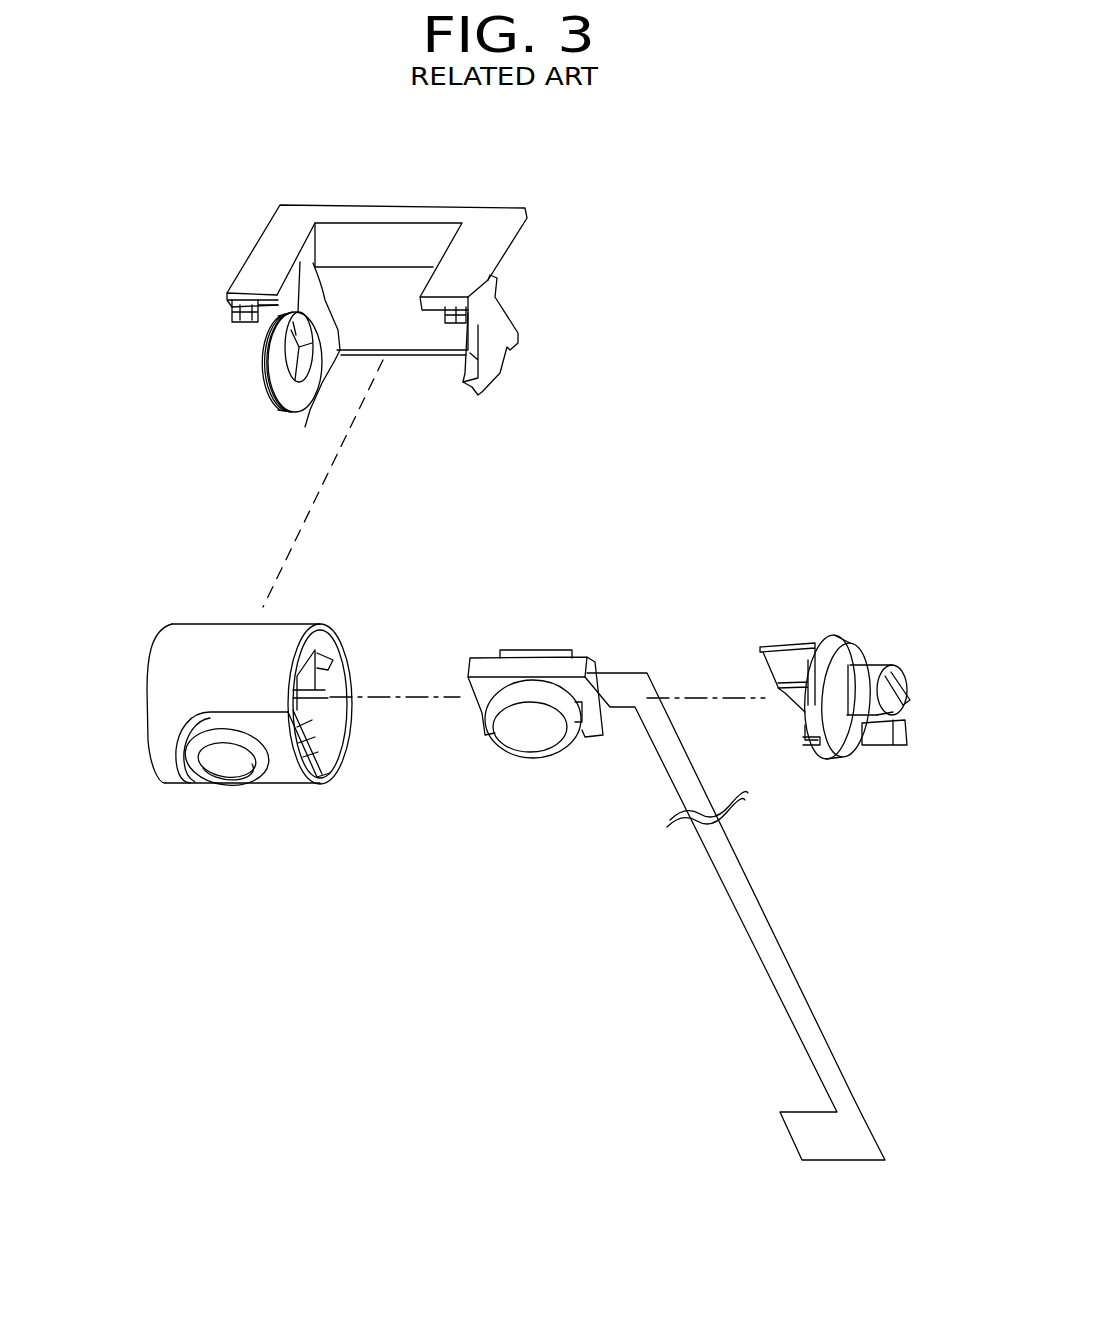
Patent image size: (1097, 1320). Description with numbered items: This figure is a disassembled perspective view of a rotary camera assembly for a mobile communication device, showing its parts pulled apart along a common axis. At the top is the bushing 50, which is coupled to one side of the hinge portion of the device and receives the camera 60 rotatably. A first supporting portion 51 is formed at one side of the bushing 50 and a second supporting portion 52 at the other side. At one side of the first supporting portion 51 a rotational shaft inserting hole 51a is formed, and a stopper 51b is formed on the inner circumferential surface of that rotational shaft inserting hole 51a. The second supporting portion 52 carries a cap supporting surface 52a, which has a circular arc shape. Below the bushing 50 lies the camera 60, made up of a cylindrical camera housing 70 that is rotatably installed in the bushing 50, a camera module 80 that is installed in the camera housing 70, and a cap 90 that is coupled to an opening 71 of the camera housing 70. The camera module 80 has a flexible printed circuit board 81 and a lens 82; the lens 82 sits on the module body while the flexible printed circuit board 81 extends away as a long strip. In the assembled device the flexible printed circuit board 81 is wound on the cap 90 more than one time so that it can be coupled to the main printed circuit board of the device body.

The bushing 50 is at (392, 329).
The first supporting portion 51 is at (245, 376).
The rotational shaft inserting hole 51a is at (313, 397).
The stopper 51b is at (270, 307).
The second supporting portion 52 is at (544, 335).
The cap supporting surface 52a is at (475, 353).
The camera 60 is at (247, 760).
The camera housing 70 is at (275, 727).
The opening 71 is at (340, 678).
The camera module 80 is at (676, 905).
The flexible printed circuit board 81 is at (735, 916).
The lens 82 is at (512, 732).
The cap 90 is at (827, 637).